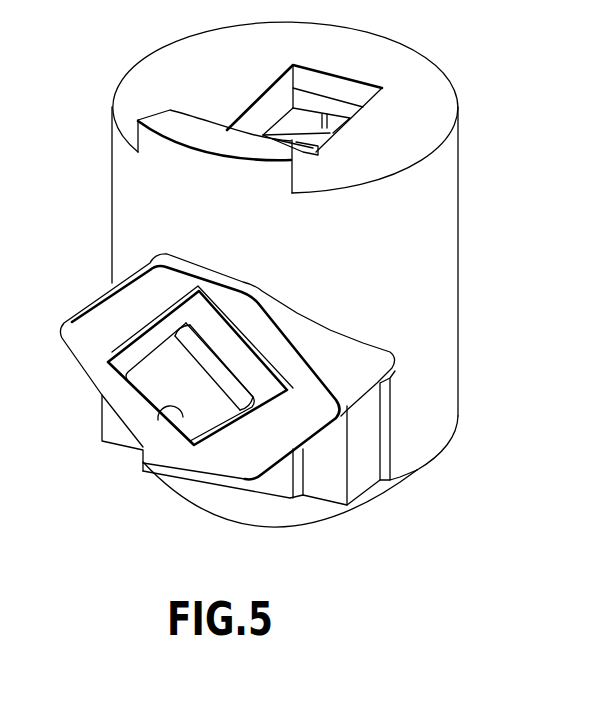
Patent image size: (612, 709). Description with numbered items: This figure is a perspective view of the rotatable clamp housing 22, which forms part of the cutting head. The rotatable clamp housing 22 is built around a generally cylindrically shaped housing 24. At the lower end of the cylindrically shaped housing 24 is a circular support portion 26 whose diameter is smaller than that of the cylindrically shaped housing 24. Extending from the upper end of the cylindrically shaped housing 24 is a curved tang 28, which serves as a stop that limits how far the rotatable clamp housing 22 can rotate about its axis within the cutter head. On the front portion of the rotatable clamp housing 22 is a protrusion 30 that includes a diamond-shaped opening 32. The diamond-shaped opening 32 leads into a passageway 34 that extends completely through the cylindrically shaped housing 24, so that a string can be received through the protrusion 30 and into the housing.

The rotatable clamp housing 22 is at (525, 125).
The cylindrically shaped housing 24 is at (446, 268).
The circular support portion 26 is at (383, 498).
The curved tang 28 is at (173, 117).
The protrusion 30 is at (80, 368).
The diamond-shaped opening 32 is at (178, 445).
The passageway 34 is at (215, 397).